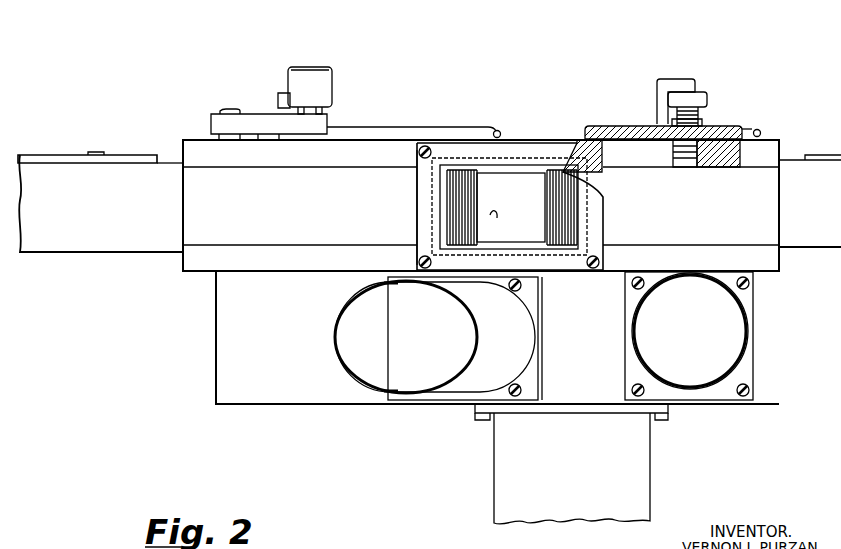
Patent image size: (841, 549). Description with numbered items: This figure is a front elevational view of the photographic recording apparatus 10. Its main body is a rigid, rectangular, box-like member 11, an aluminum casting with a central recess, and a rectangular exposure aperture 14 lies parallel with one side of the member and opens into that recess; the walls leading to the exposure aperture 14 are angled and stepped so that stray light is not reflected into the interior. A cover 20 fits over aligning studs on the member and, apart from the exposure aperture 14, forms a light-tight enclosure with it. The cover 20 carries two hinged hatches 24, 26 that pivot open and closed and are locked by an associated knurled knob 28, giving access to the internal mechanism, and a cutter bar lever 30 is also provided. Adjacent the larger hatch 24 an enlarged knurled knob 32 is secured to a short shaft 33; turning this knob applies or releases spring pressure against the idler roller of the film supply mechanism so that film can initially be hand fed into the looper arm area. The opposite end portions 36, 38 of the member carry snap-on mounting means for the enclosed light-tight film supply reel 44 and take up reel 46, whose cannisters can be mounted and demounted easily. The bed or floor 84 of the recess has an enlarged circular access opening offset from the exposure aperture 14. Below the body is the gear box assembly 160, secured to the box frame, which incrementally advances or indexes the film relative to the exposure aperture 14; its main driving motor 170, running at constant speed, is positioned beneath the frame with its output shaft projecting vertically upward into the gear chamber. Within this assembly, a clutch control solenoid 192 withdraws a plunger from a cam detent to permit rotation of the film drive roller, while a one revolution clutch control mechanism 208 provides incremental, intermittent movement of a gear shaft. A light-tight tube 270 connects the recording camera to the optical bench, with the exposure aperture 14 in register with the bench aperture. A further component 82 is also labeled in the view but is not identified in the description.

The photographic recording apparatus 10 is at (150, 327).
The box-like member 11 is at (301, 223).
The exposure aperture 14 is at (509, 175).
The cover 20 is at (183, 148).
The hinged hatch 24 is at (745, 126).
The hinged hatch 26 is at (387, 126).
The knurled knob 28 is at (285, 98).
The cutter bar lever 30 is at (251, 122).
The enlarged knurled knob 32 is at (672, 79).
The short shaft 33 is at (672, 122).
The end portion 36 is at (780, 243).
The end portion 38 is at (183, 240).
The film supply reel 44 is at (818, 166).
The take up reel 46 is at (67, 162).
The stop lug 82 is at (226, 110).
The bed or floor 84 is at (210, 268).
The gear box assembly 160 is at (230, 347).
The main driving motor 170 is at (508, 478).
The clutch control solenoid 192 is at (712, 376).
The one revolution clutch control mechanism 208 is at (390, 384).
The light-tight tube 270 is at (423, 198).